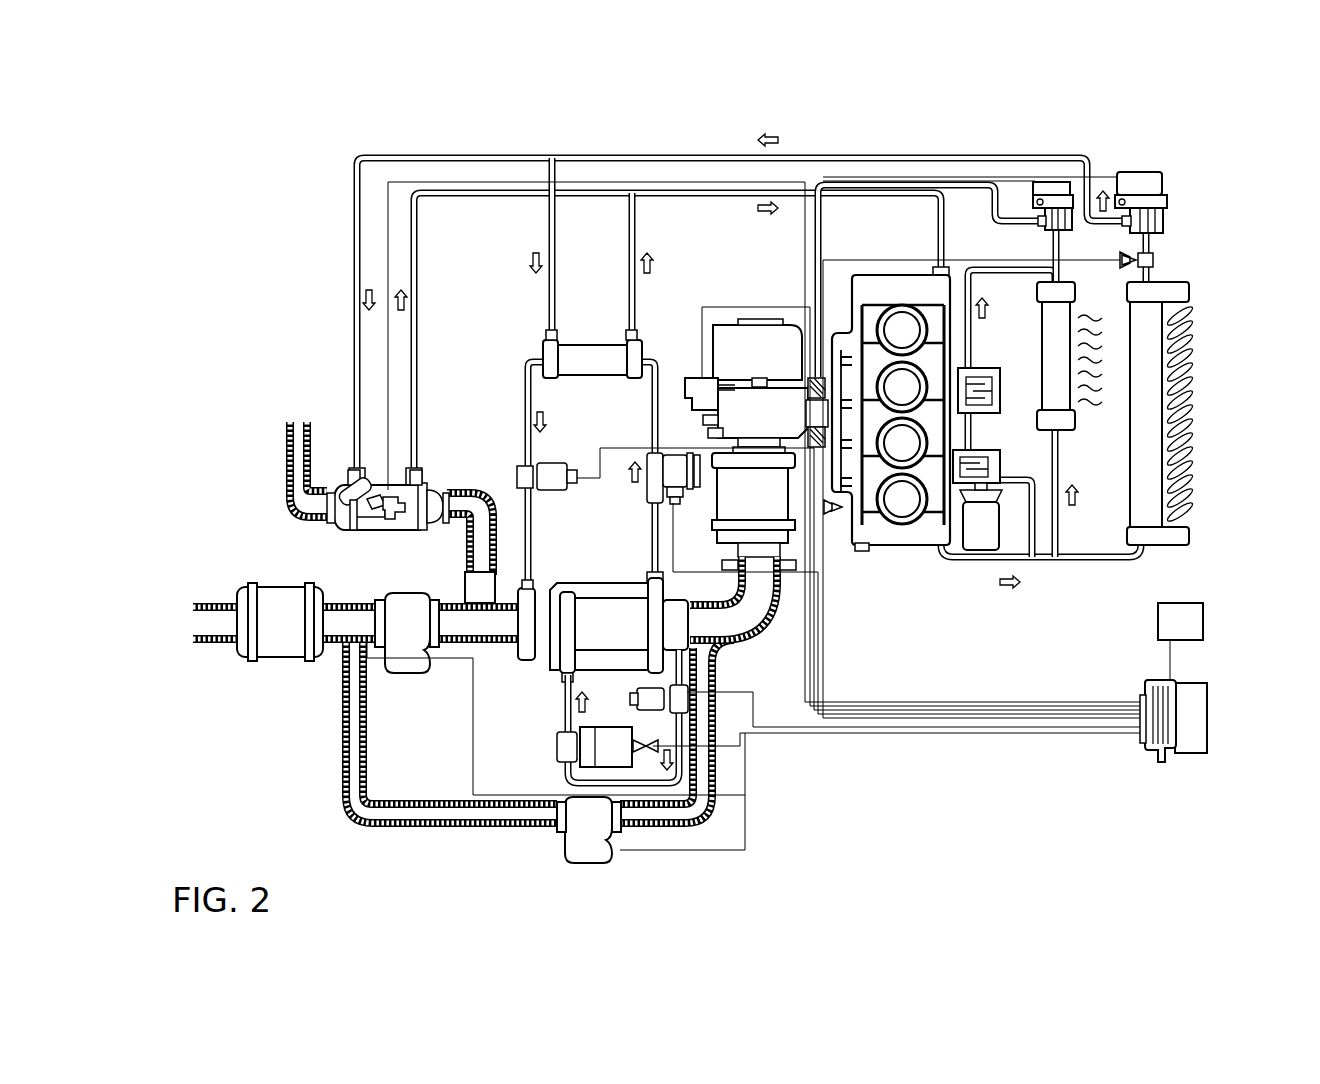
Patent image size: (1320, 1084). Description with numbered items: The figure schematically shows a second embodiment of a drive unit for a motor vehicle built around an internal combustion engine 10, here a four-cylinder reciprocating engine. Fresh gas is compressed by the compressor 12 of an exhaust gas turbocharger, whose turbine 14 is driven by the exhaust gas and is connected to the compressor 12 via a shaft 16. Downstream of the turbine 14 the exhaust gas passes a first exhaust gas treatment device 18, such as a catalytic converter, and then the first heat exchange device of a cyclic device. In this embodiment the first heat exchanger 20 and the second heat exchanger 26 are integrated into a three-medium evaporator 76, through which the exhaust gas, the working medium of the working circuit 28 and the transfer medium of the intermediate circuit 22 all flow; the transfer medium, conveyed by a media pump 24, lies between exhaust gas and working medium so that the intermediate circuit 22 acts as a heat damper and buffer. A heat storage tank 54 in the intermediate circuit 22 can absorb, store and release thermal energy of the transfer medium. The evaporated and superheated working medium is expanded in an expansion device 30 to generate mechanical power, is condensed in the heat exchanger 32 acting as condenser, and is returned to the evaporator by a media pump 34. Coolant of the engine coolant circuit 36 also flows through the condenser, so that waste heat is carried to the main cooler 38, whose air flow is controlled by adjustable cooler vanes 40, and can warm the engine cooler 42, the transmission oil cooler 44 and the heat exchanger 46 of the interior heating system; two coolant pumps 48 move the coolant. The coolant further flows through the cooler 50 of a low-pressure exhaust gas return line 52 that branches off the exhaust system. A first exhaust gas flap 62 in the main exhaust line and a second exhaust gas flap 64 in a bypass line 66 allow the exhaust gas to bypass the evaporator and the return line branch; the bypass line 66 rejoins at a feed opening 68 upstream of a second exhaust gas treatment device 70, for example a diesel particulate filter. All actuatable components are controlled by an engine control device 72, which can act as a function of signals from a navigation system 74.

The internal combustion engine 10 is at (930, 527).
The compressor 12 is at (785, 340).
The turbine 14 is at (737, 405).
The shaft 16 is at (760, 383).
The first exhaust gas treatment device 18 is at (760, 500).
The first heat exchanger 20 is at (541, 670).
The intermediate circuit 22 is at (652, 781).
The media pump 24 is at (690, 696).
The second heat exchanger 26 is at (625, 622).
The working circuit 28 is at (525, 392).
The expansion device 30 is at (673, 473).
The heat exchanger 32 is at (583, 355).
The media pump 34 is at (548, 478).
The engine coolant circuit 36 is at (465, 160).
The main cooler 38 is at (1145, 312).
The cooler vanes 40 is at (1190, 336).
The engine cooler 42 is at (980, 468).
The transmission oil cooler 44 is at (983, 392).
The heat exchanger 46 is at (1058, 385).
The coolant pumps 48 is at (1148, 185).
The cooler 50 is at (360, 518).
The low-pressure exhaust gas return line 52 is at (297, 462).
The heat storage tank 54 is at (615, 748).
The first exhaust gas flap 62 is at (406, 643).
The second exhaust gas flap 64 is at (583, 834).
The bypass line 66 is at (358, 812).
The feed opening 68 is at (349, 641).
The second exhaust gas treatment device 70 is at (272, 637).
The engine control device 72 is at (1200, 710).
The navigation system 74 is at (1195, 612).
The three-medium evaporator 76 is at (542, 623).